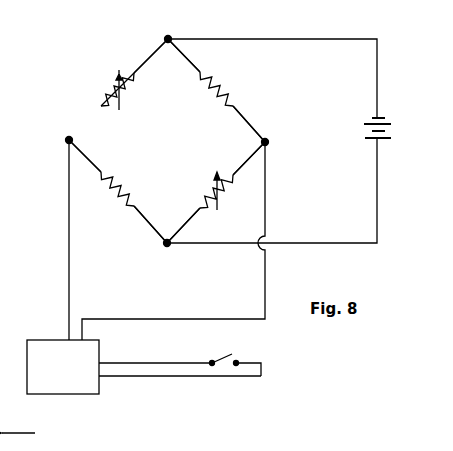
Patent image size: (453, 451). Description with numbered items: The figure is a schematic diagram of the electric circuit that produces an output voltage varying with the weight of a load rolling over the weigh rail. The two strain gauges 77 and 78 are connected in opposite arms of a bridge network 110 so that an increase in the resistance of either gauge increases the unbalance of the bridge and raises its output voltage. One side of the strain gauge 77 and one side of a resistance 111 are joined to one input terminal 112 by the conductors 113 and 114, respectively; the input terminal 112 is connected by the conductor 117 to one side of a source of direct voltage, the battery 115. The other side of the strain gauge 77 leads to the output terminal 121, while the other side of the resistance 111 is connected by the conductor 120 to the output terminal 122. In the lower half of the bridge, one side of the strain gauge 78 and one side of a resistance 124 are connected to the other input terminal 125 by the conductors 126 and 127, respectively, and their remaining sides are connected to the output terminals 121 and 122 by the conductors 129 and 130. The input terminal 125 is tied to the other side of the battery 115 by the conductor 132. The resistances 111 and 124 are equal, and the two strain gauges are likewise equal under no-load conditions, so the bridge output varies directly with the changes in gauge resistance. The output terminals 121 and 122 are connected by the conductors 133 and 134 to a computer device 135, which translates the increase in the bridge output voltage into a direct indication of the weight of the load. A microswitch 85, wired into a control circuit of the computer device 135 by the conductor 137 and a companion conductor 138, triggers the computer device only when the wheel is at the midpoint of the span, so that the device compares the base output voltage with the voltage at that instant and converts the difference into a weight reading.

The bridge network 110 is at (121, 254).
The input terminal 112 is at (169, 37).
The output terminal 121 is at (68, 137).
The output terminal 122 is at (268, 142).
The input terminal 125 is at (164, 247).
The conductor 113 is at (147, 61).
The strain gauge 77 is at (113, 90).
The conductor 114 is at (190, 56).
The resistance 111 is at (226, 93).
The conductor 120 is at (248, 114).
The conductor 130 is at (88, 160).
The resistance 124 is at (118, 205).
The conductor 127 is at (148, 222).
The conductor 126 is at (190, 227).
The strain gauge 78 is at (223, 186).
The conductor 129 is at (252, 156).
The conductor 117 is at (276, 38).
The battery 115 is at (369, 128).
The conductor 132 is at (331, 245).
The conductor 134 is at (265, 279).
The conductor 133 is at (68, 226).
The computer device 135 is at (78, 392).
The conductor 137 is at (147, 361).
The microswitch 85 is at (228, 358).
The control lead 138 is at (186, 378).